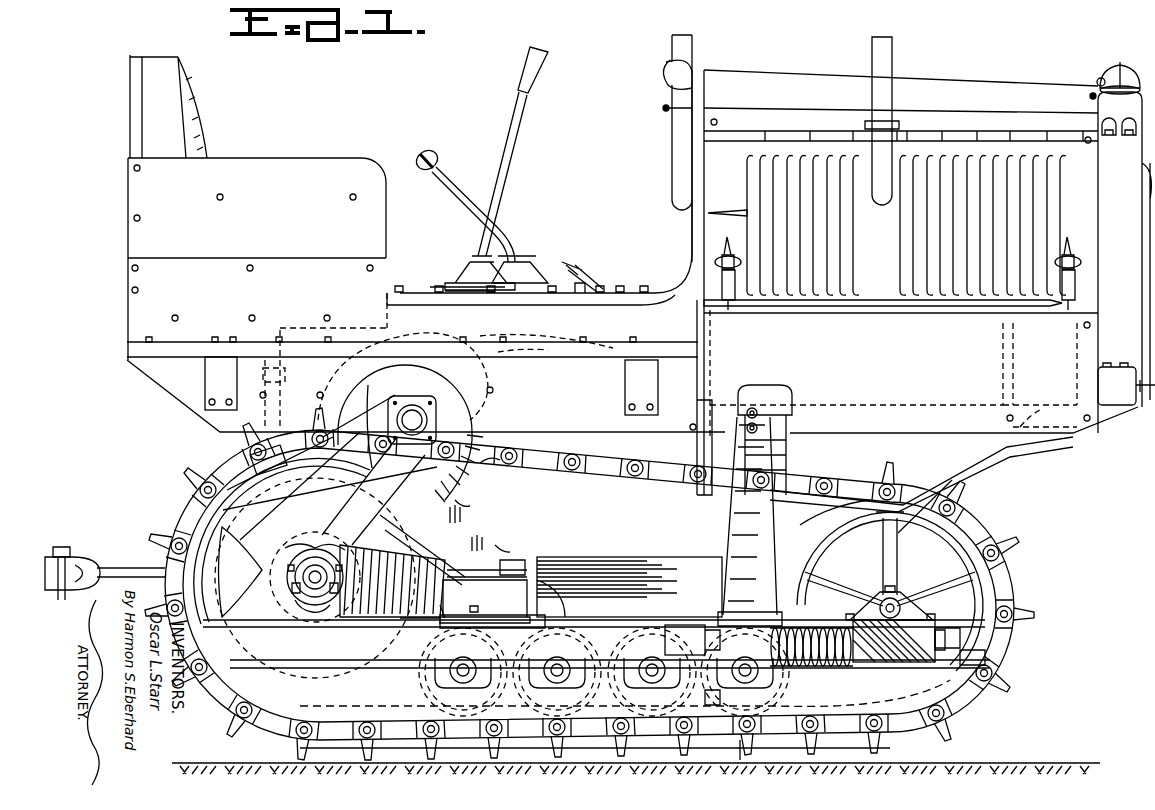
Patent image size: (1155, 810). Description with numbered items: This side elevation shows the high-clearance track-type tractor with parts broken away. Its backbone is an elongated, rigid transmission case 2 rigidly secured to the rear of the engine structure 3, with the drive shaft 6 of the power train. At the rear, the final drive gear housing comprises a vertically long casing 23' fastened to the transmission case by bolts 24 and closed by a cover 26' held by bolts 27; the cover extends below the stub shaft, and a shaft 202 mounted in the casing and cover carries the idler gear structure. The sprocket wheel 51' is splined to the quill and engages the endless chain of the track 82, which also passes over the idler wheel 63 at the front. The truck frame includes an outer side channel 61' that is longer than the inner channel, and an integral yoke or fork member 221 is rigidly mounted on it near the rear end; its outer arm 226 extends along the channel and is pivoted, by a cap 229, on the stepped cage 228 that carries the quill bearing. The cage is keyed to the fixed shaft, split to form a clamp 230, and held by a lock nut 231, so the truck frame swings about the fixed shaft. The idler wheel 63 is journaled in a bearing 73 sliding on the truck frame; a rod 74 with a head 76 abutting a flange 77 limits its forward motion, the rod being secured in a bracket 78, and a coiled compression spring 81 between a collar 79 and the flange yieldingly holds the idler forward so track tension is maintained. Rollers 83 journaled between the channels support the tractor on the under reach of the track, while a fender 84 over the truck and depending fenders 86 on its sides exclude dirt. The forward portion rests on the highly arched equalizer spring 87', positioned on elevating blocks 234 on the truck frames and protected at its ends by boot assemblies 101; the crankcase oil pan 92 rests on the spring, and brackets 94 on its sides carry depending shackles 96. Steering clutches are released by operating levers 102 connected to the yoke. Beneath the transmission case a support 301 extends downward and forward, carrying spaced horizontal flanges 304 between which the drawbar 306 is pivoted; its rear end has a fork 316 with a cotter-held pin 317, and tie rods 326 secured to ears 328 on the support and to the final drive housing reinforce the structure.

The operating lever 102 is at (510, 153).
The transmission case 2 is at (112, 409).
The engine structure 3 is at (478, 350).
The drive shaft 6 is at (742, 762).
The casing 23' is at (410, 407).
The shaft 202 is at (372, 460).
The bolts 27 is at (278, 470).
The outer arm 226 is at (322, 555).
The cap 229 is at (300, 540).
The stepped cage 228 is at (328, 540).
The sprocket wheel 51' is at (315, 528).
The cover 26' is at (315, 578).
The lock nut 231 is at (297, 602).
The clamp 230 is at (312, 612).
The outer side channel 61' is at (378, 636).
The yoke or fork member 221 is at (440, 605).
The pin 317 is at (50, 548).
The fork 316 is at (92, 548).
The drawbar 306 is at (125, 568).
The support 301 is at (460, 506).
The tie rods 326 is at (500, 550).
The ears 328 is at (508, 560).
The horizontal flanges 304 is at (455, 600).
The bolts 24 is at (480, 463).
The fender 84 is at (620, 572).
The bracket 78 is at (673, 635).
The rod 74 is at (720, 640).
The boot assemblies 101 is at (773, 513).
The brackets 94 is at (730, 427).
The crankcase oil pan 92 is at (763, 404).
The shackles 96 is at (773, 432).
The equalizer spring 87' is at (784, 455).
The idler wheel 63 is at (832, 525).
The elevating blocks 234 is at (826, 545).
The bearing 73 is at (897, 600).
The flange 77 is at (937, 637).
The head 76 is at (975, 657).
The coiled compression spring 81 is at (810, 667).
The collar 79 is at (712, 690).
The track 82 is at (970, 705).
The rollers 83 is at (670, 722).
The depending fenders 86 is at (412, 700).